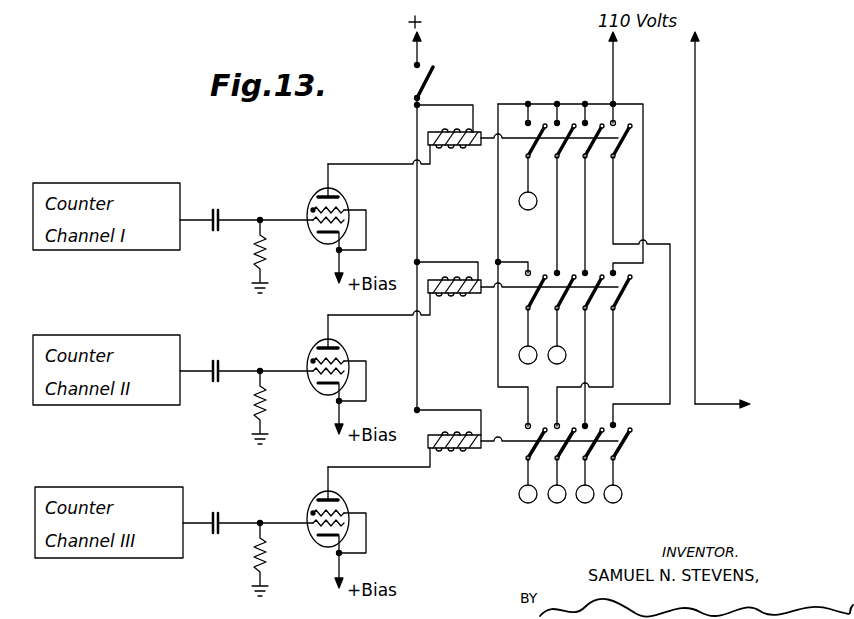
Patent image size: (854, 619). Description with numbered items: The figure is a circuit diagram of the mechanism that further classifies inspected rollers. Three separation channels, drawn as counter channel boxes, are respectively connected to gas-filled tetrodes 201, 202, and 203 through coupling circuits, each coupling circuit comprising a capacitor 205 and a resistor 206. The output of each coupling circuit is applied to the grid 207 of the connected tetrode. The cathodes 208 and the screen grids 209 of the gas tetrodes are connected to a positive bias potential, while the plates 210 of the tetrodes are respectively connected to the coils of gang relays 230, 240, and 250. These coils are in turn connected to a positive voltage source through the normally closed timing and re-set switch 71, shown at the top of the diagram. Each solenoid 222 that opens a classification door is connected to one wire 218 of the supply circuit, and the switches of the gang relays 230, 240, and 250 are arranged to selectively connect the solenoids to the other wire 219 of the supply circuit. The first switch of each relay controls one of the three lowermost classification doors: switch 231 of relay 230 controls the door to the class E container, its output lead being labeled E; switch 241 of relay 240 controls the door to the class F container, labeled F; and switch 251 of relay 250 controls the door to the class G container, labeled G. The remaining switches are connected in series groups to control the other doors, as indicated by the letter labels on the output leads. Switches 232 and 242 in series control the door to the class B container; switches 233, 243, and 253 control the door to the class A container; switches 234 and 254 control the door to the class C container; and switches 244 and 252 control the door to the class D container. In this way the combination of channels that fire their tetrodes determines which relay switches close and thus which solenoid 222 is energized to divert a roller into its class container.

The timing and re-set switch 71 is at (436, 80).
The gas-filled tetrode 201 is at (312, 207).
The gas-filled tetrode 202 is at (318, 348).
The gas-filled tetrode 203 is at (318, 500).
The capacitor 205 is at (222, 208).
The resistor 206 is at (256, 262).
The grid 207 is at (313, 228).
The cathode 208 is at (325, 238).
The screen grid 209 is at (345, 211).
The plate 210 is at (320, 196).
The supply circuit wire 218 is at (697, 86).
The supply circuit wire 219 is at (615, 78).
The solenoid 222 is at (724, 426).
The gang relay 230 is at (462, 150).
The switch 231 is at (543, 123).
The switch 232 is at (572, 123).
The switch 233 is at (600, 123).
The switch 234 is at (631, 127).
The gang relay 240 is at (468, 296).
The switch 241 is at (544, 275).
The switch 242 is at (574, 275).
The switch 243 is at (602, 275).
The switch 244 is at (629, 279).
The gang relay 250 is at (466, 452).
The switch 251 is at (528, 455).
The switch 252 is at (560, 452).
The switch 253 is at (592, 448).
The switch 254 is at (618, 452).